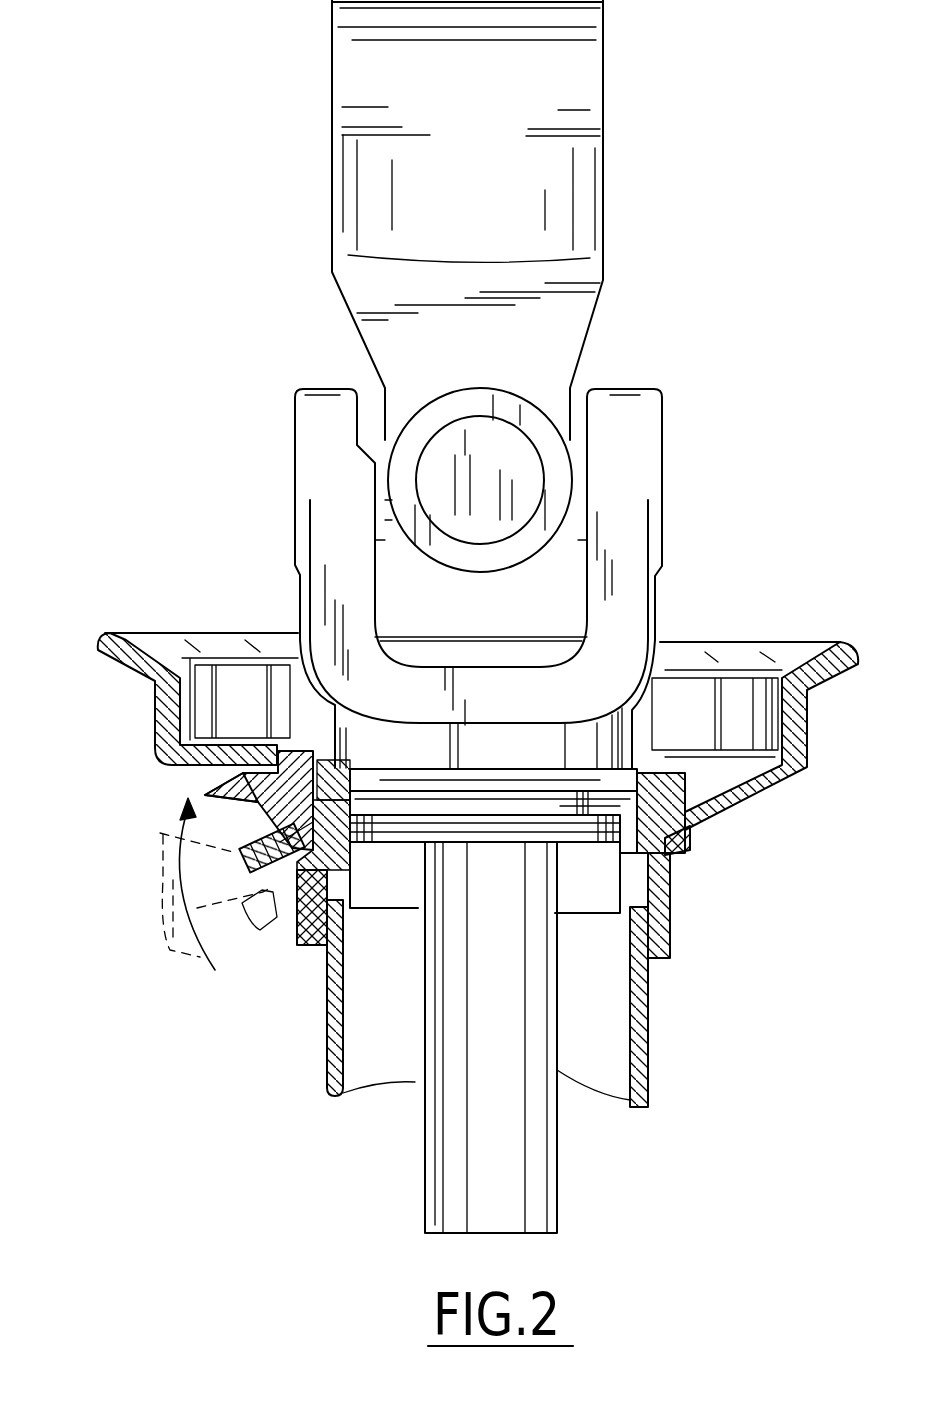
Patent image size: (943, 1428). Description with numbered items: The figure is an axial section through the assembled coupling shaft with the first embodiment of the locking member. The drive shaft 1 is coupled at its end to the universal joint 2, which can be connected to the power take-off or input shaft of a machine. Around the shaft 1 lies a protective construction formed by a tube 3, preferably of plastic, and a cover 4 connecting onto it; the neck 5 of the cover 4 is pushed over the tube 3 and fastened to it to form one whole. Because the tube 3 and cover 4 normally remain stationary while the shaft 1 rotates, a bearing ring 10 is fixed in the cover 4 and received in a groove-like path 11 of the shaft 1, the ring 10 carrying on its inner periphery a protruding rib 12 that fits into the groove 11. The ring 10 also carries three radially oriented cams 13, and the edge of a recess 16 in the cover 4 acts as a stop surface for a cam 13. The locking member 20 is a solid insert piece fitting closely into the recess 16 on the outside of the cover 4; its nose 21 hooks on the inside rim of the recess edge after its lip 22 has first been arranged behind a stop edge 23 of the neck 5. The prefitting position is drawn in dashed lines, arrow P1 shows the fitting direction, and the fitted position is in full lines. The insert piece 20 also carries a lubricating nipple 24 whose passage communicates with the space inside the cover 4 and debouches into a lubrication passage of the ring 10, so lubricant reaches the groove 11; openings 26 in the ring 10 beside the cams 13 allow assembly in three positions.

The drive shaft 1 is at (507, 1162).
The universal joint 2 is at (630, 519).
The tube 3 is at (642, 1020).
The cover 4 is at (763, 795).
The neck 5 is at (318, 945).
The bearing ring 10 is at (672, 862).
The groove-like path 11 is at (598, 845).
The protruding rib 12 is at (670, 940).
The cam 13 is at (690, 857).
The recess 16 is at (673, 850).
The locking member 20 is at (207, 794).
The nose 21 is at (287, 752).
The lip 22 is at (273, 922).
The stop edge 23 is at (296, 907).
The lubricating nipple 24 is at (250, 868).
The opening 26 is at (345, 762).
The arrow P1 is at (179, 824).